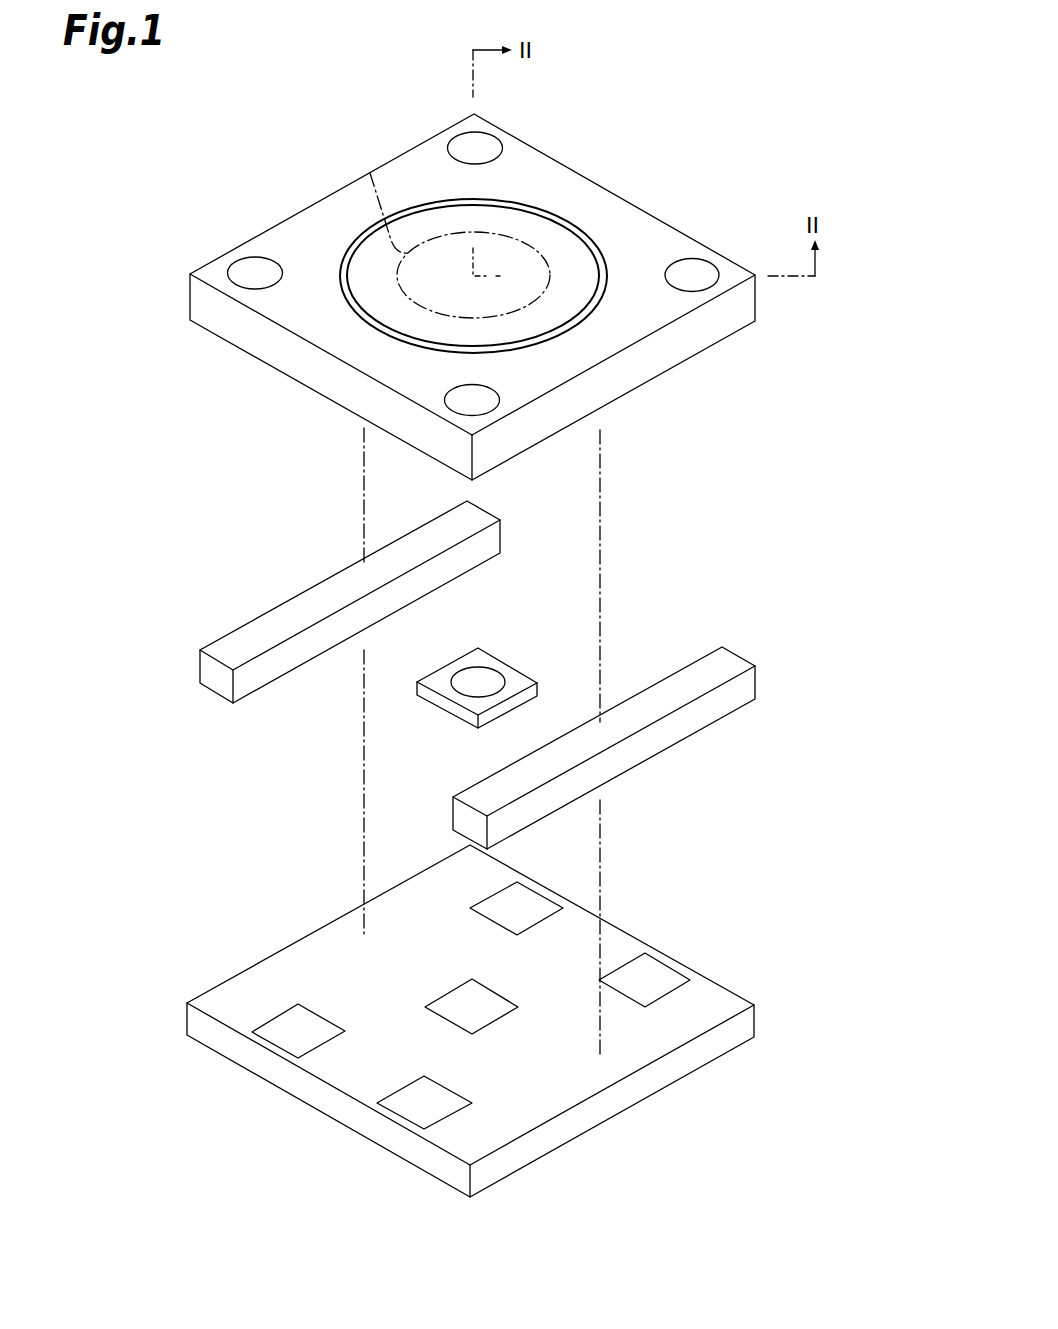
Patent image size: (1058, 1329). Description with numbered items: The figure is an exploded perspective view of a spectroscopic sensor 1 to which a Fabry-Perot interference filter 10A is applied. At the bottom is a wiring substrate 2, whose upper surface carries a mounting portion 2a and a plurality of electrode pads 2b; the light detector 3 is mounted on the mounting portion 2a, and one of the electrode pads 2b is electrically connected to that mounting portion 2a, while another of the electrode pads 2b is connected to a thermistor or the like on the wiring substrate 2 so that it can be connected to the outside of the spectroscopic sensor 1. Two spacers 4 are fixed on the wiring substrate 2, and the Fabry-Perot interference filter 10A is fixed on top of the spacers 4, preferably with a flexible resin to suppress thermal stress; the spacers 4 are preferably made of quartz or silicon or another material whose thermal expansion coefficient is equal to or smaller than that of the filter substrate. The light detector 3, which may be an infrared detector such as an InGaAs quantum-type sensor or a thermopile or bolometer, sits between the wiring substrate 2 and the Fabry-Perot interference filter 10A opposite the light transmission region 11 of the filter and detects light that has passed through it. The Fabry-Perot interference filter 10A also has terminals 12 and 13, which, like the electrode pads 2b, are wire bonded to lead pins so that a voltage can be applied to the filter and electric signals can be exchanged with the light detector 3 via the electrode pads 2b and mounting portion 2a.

The spectroscopic sensor 1 is at (703, 87).
The Fabry-Perot interference filter 10A is at (603, 202).
The light transmission region 11 is at (370, 173).
The terminal 12 is at (480, 148).
The terminal 13 is at (253, 273).
The spacer 4 is at (238, 638).
The light detector 3 is at (477, 677).
The wiring substrate 2 is at (622, 940).
The mounting portion 2a is at (487, 997).
The electrode pad 2b is at (525, 898).